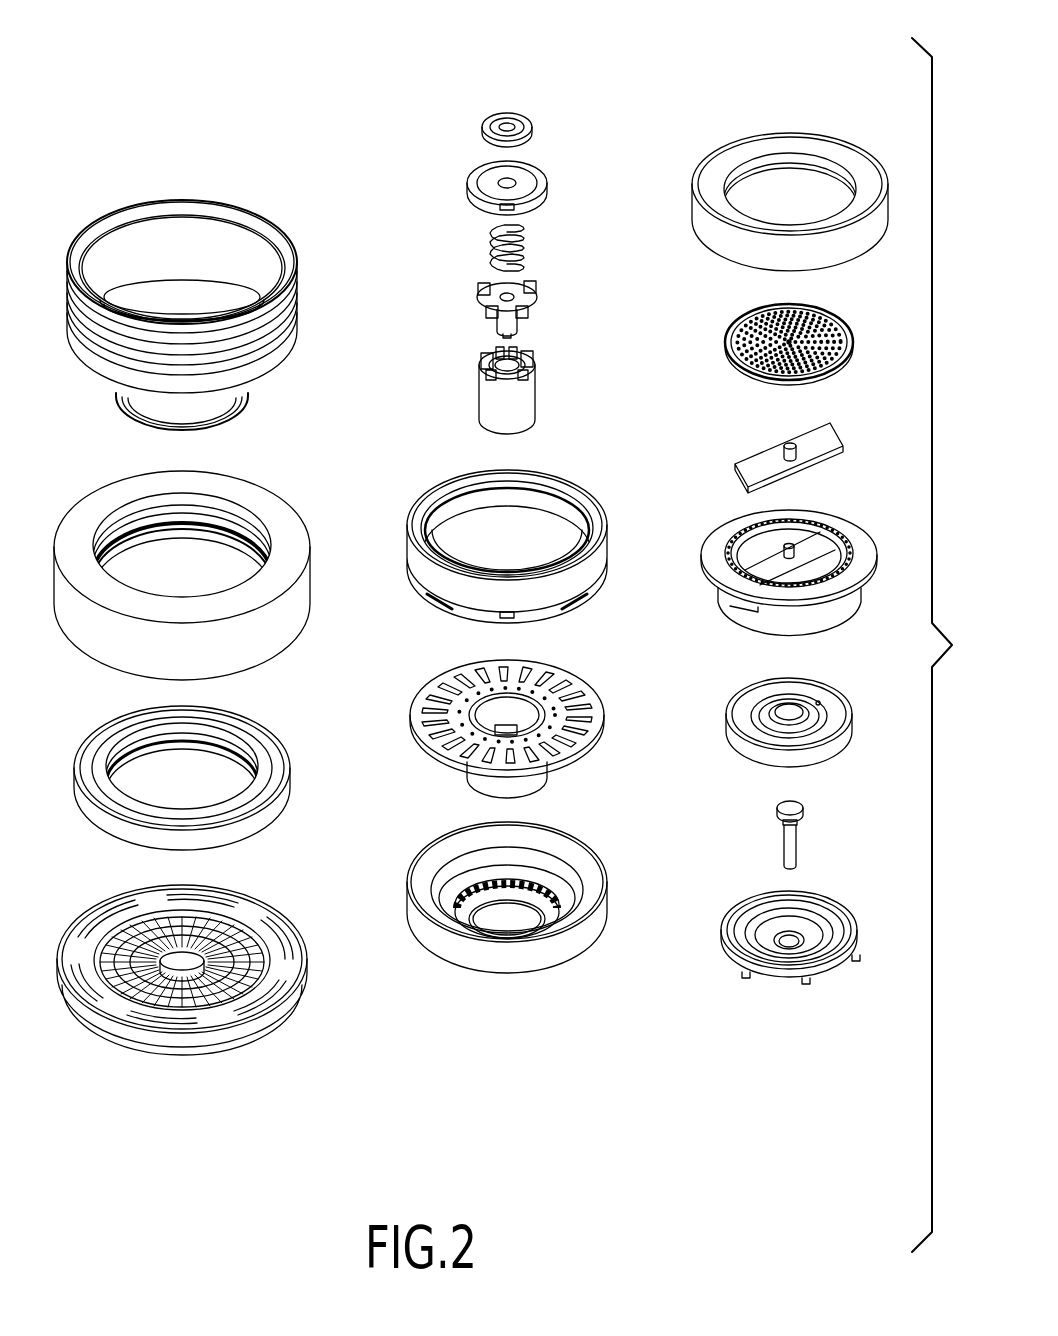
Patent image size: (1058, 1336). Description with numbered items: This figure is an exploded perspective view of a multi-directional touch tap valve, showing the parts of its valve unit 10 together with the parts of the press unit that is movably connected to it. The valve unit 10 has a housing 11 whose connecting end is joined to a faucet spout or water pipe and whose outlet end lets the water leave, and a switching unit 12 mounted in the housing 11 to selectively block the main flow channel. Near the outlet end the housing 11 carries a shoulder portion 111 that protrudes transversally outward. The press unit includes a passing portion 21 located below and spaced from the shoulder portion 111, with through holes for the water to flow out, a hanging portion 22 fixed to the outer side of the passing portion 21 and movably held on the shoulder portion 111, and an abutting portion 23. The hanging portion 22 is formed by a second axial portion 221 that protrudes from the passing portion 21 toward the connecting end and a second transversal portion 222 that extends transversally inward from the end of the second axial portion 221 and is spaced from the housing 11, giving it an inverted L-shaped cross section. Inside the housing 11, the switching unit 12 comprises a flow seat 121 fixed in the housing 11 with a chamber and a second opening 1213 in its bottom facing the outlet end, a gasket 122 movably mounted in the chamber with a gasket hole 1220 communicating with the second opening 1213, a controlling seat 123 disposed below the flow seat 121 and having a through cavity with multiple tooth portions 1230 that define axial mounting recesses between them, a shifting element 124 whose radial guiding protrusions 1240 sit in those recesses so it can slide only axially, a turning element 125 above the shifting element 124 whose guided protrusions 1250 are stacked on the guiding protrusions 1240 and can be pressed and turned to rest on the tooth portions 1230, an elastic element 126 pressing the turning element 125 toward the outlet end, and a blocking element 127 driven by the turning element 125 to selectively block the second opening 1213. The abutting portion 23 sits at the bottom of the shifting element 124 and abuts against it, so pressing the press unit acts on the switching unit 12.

The valve unit 10 is at (198, 77).
The housing 11 is at (140, 197).
The switching unit 12 is at (447, 147).
The passing portion 21 is at (182, 953).
The hanging portion 22 is at (188, 559).
The abutting portion 23 is at (175, 962).
The shoulder portion 111 is at (226, 848).
The flow seat 121 is at (740, 518).
The gasket 122 is at (765, 720).
The controlling seat 123 is at (490, 733).
The shifting element 124 is at (450, 403).
The turning element 125 is at (451, 280).
The elastic element 126 is at (520, 253).
The blocking element 127 is at (785, 852).
The second axial portion 221 is at (237, 645).
The second transversal portion 222 is at (245, 490).
The second opening 1213 is at (797, 943).
The gasket hole 1220 is at (820, 700).
The tooth portions 1230 is at (515, 728).
The guiding protrusions 1240 is at (485, 378).
The guided protrusions 1250 is at (485, 316).